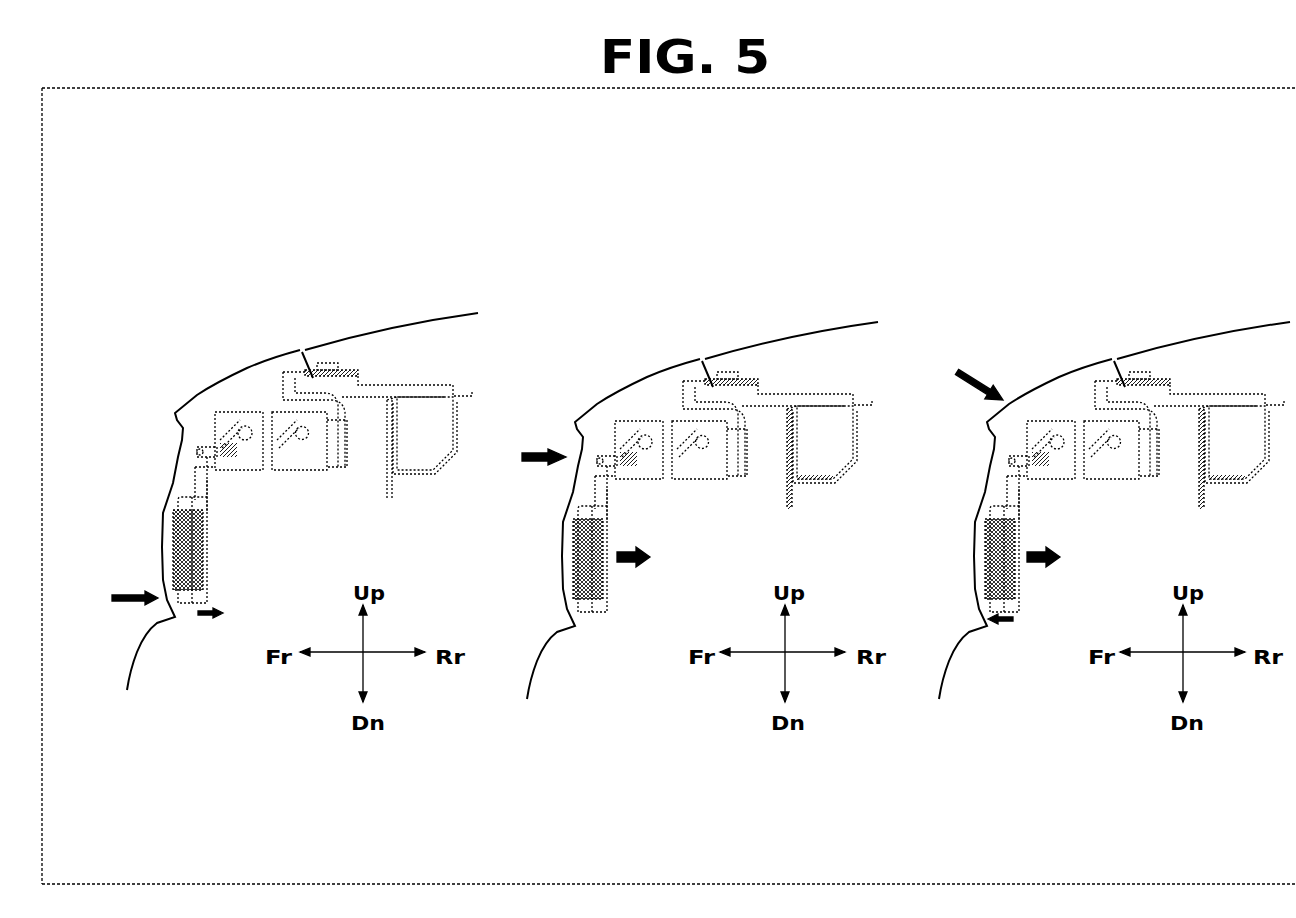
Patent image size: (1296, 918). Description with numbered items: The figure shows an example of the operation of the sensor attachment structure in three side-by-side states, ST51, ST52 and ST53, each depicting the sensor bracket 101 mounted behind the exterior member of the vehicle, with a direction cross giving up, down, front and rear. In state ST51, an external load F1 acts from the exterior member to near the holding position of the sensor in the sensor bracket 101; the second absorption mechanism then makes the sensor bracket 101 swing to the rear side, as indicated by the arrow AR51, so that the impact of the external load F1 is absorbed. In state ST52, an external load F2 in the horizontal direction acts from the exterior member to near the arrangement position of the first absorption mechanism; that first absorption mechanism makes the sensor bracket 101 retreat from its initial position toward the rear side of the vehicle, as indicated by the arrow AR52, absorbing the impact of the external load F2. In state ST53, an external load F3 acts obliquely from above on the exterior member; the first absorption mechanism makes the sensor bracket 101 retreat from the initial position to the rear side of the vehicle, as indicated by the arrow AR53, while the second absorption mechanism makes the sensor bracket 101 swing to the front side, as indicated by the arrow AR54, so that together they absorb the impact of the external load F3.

The sensor bracket 101 is at (203, 595).
The operation state for external load F1 ST51 is at (252, 276).
The operation state for external load F2 ST52 is at (672, 276).
The operation state for external load F3 ST53 is at (1092, 276).
The external load F1 is at (119, 604).
The external load F2 is at (528, 457).
The external load F3 is at (963, 376).
The arrow AR51 is at (205, 620).
The arrow AR52 is at (627, 548).
The arrow AR53 is at (1032, 548).
The arrow AR54 is at (1000, 626).